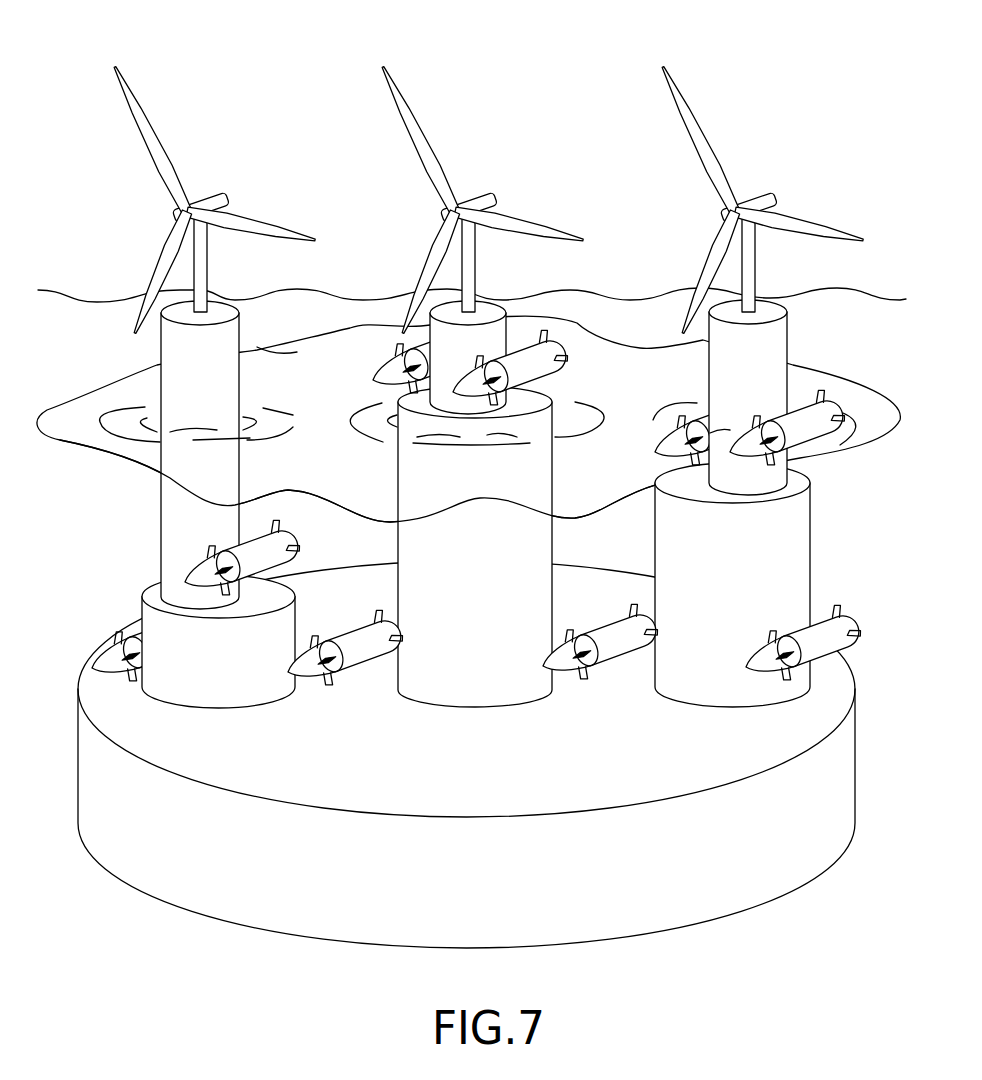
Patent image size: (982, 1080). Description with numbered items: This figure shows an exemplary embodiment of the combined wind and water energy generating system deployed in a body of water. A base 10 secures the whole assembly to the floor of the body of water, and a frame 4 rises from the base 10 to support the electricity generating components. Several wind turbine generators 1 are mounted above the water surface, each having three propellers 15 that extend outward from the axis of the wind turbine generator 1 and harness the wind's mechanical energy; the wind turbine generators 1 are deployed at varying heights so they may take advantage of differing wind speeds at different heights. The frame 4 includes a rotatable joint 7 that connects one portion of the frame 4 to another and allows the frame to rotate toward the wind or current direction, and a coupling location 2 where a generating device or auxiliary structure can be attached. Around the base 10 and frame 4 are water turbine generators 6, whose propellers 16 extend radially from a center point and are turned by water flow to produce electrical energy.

The wind turbine generator 1 is at (482, 200).
The coupling location 2 is at (776, 297).
The frame 4 is at (533, 492).
The water turbine generator 6 is at (408, 338).
The rotatable joint 7 is at (505, 323).
The base 10 is at (238, 897).
The propellers 15 is at (425, 137).
The propellers 16 is at (390, 348).